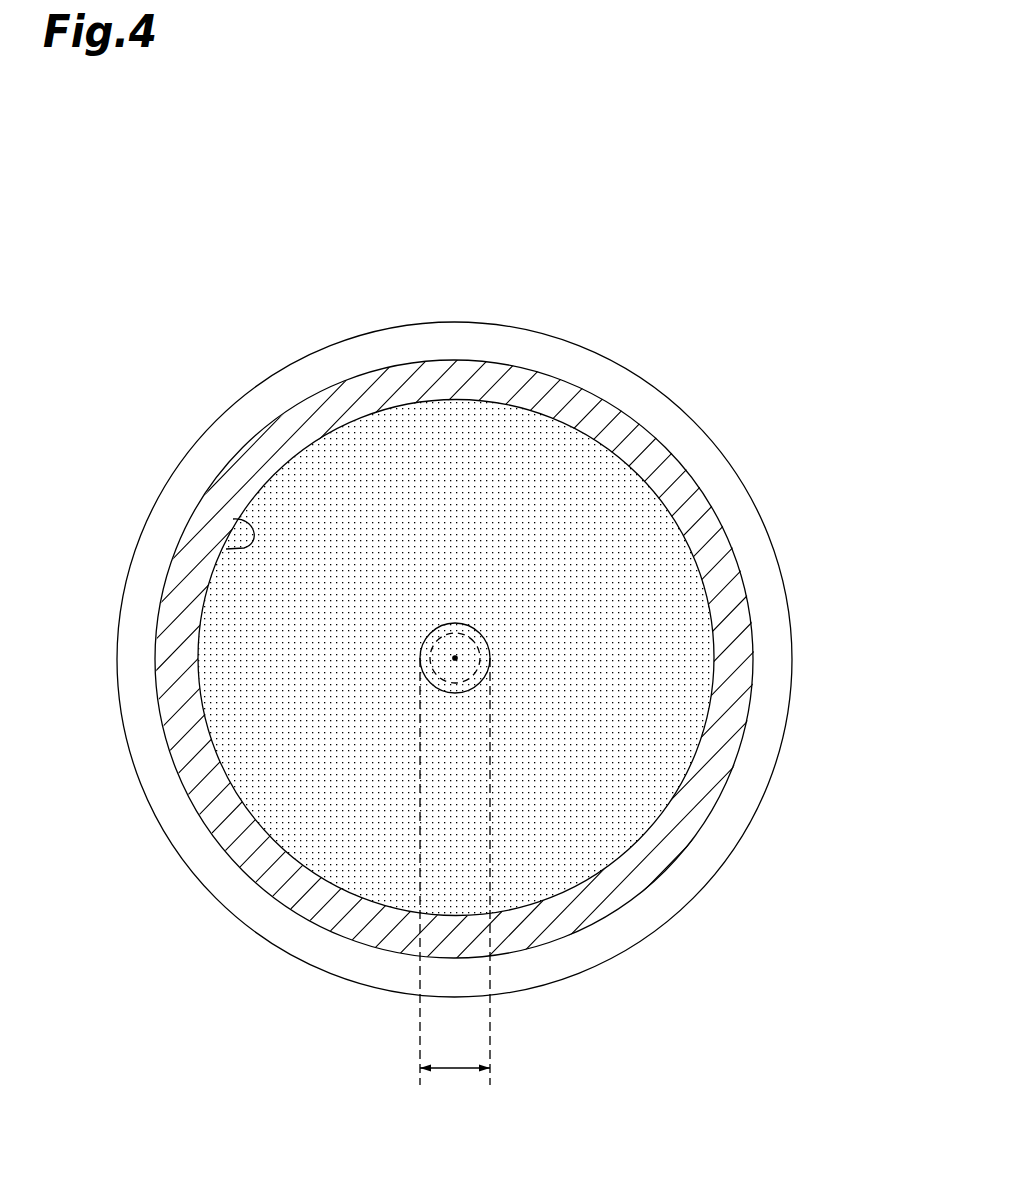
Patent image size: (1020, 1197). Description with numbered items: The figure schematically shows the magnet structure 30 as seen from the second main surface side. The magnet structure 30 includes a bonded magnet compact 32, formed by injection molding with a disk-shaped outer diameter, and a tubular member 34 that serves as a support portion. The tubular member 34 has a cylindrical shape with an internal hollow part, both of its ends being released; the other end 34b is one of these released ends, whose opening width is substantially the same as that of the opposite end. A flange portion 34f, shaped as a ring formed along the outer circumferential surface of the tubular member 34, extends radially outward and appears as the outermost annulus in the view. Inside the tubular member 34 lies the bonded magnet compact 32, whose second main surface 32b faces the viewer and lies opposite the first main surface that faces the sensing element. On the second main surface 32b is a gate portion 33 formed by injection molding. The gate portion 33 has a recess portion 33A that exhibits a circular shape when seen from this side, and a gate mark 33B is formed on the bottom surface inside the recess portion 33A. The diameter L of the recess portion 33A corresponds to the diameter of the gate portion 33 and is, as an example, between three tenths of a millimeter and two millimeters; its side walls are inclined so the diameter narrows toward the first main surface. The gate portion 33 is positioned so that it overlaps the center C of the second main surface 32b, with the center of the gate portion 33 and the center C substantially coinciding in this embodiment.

The magnet structure 30 is at (698, 262).
The bonded magnet compact 32 is at (660, 496).
The second main surface 32b is at (452, 430).
The gate portion 33 is at (875, 603).
The recess portion 33A is at (488, 644).
The gate mark 33B is at (481, 659).
The tubular member 34 is at (133, 773).
The other end 34b is at (228, 544).
The flange portion 34f is at (135, 618).
The center C is at (455, 658).
The diameter of the recess portion L is at (452, 1070).